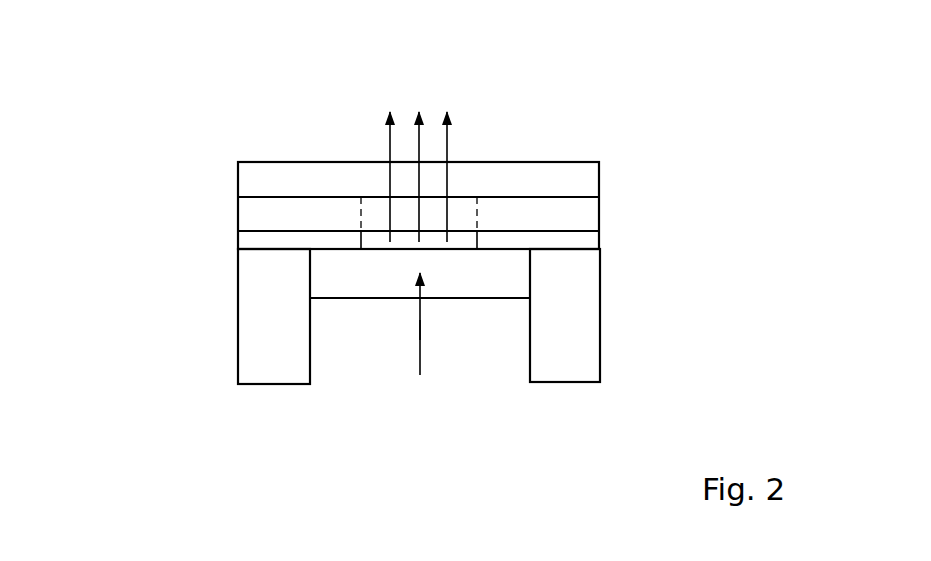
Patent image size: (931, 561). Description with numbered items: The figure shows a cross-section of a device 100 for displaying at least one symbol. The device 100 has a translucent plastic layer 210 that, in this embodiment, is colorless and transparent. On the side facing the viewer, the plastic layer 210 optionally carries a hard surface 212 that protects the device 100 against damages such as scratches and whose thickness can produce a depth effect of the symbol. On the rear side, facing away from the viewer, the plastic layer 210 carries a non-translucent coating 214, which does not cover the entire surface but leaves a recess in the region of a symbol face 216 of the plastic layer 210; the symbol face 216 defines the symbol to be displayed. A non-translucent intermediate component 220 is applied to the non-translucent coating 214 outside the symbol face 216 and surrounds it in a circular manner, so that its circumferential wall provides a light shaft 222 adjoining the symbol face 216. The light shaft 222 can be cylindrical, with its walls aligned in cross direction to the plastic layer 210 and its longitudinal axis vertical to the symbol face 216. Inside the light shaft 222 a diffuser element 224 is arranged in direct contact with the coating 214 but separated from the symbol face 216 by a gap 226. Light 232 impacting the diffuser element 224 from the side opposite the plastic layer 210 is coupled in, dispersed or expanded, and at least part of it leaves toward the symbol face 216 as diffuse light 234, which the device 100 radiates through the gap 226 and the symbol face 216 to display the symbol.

The device 100 is at (225, 130).
The translucent plastic layer 210 is at (600, 213).
The hard surface 212 is at (600, 177).
The non-translucent coating 214 is at (600, 241).
The symbol face 216 is at (433, 232).
The non-translucent intermediate component 220 is at (237, 288).
The light shaft 222 is at (502, 328).
The diffuser element 224 is at (403, 300).
The gap 226 is at (403, 245).
The light 232 is at (420, 330).
The diffuse light 234 is at (417, 100).